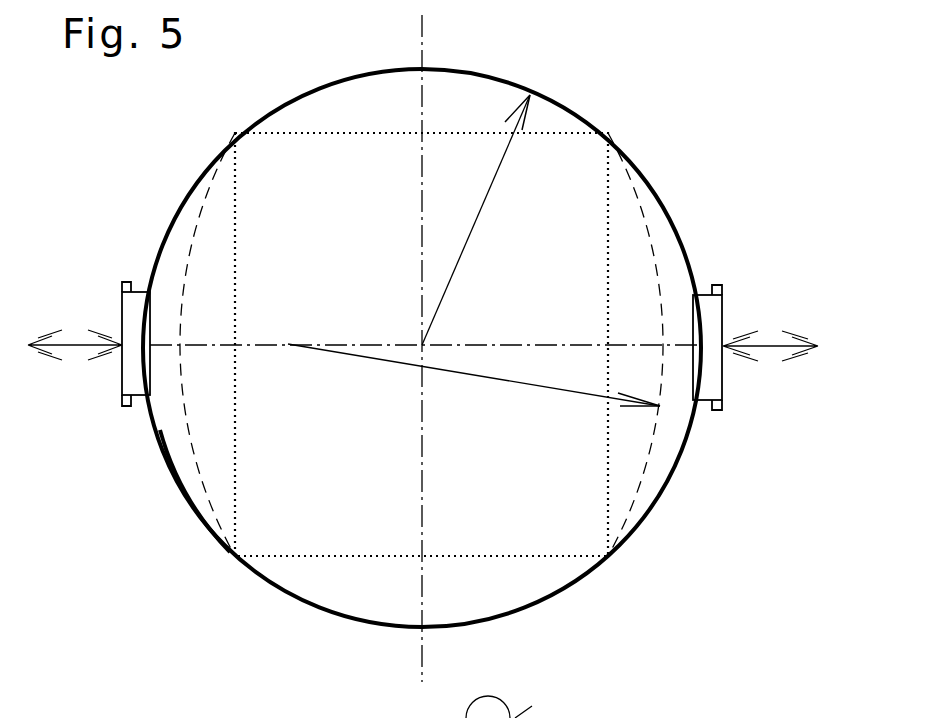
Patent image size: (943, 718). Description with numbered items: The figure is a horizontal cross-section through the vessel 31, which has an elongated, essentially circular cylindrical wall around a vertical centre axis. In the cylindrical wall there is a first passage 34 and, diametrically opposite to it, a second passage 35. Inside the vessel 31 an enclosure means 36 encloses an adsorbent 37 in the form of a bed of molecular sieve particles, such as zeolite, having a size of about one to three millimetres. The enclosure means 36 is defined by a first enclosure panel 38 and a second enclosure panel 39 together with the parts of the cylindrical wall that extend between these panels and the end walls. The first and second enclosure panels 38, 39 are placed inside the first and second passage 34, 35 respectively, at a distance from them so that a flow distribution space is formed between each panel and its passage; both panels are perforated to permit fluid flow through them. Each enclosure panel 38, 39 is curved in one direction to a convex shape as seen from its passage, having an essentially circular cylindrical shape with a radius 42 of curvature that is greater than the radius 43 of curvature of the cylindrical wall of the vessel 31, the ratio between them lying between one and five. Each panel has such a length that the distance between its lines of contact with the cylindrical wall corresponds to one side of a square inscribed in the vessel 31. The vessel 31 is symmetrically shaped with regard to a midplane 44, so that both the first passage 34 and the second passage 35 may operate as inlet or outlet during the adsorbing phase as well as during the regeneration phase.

The vessel 31 is at (155, 170).
The first passage 34 is at (725, 302).
The second passage 35 is at (122, 305).
The enclosure means 36 is at (273, 110).
The adsorbent 37 is at (354, 283).
The first enclosure panel 38 is at (636, 188).
The second enclosure panel 39 is at (195, 468).
The radius of curvature of enclosure panel 42 is at (480, 378).
The radius of curvature of cylindrical wall 43 is at (470, 234).
The midplane 44 is at (424, 24).